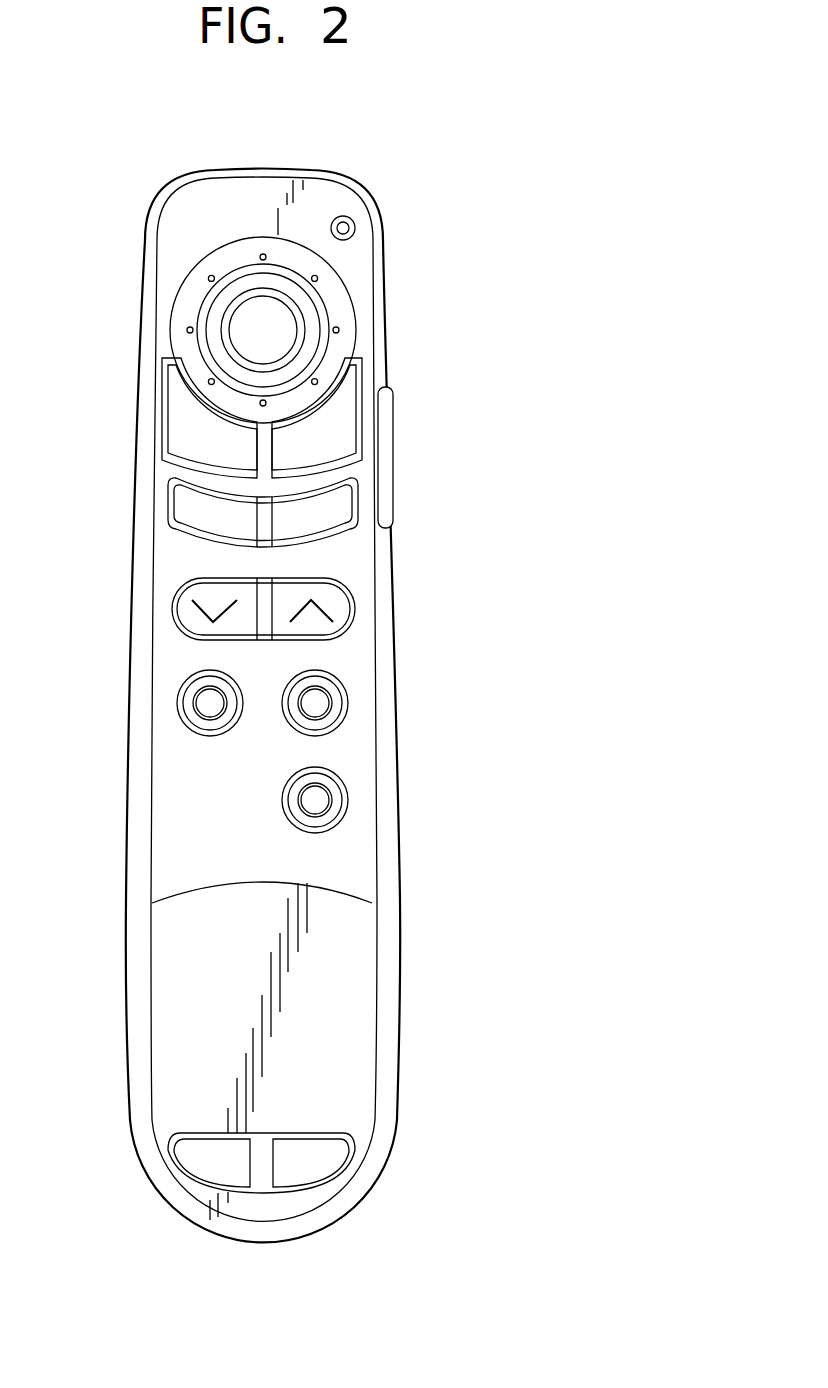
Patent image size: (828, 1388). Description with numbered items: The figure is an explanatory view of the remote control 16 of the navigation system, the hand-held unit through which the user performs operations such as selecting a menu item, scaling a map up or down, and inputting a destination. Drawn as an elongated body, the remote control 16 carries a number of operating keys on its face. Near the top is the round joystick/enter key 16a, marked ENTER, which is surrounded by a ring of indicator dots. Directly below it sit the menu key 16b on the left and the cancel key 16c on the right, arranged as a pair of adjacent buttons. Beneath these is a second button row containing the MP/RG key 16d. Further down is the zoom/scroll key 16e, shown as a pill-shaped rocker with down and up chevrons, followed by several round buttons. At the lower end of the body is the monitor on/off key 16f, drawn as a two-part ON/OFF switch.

The remote control 16 is at (470, 223).
The joystick/enter key 16a is at (265, 315).
The menu key 16b is at (183, 416).
The cancel key 16c is at (345, 418).
The MP/RG key 16d is at (347, 505).
The zoom/scroll key 16e is at (338, 607).
The monitor on/off key 16f is at (262, 1180).